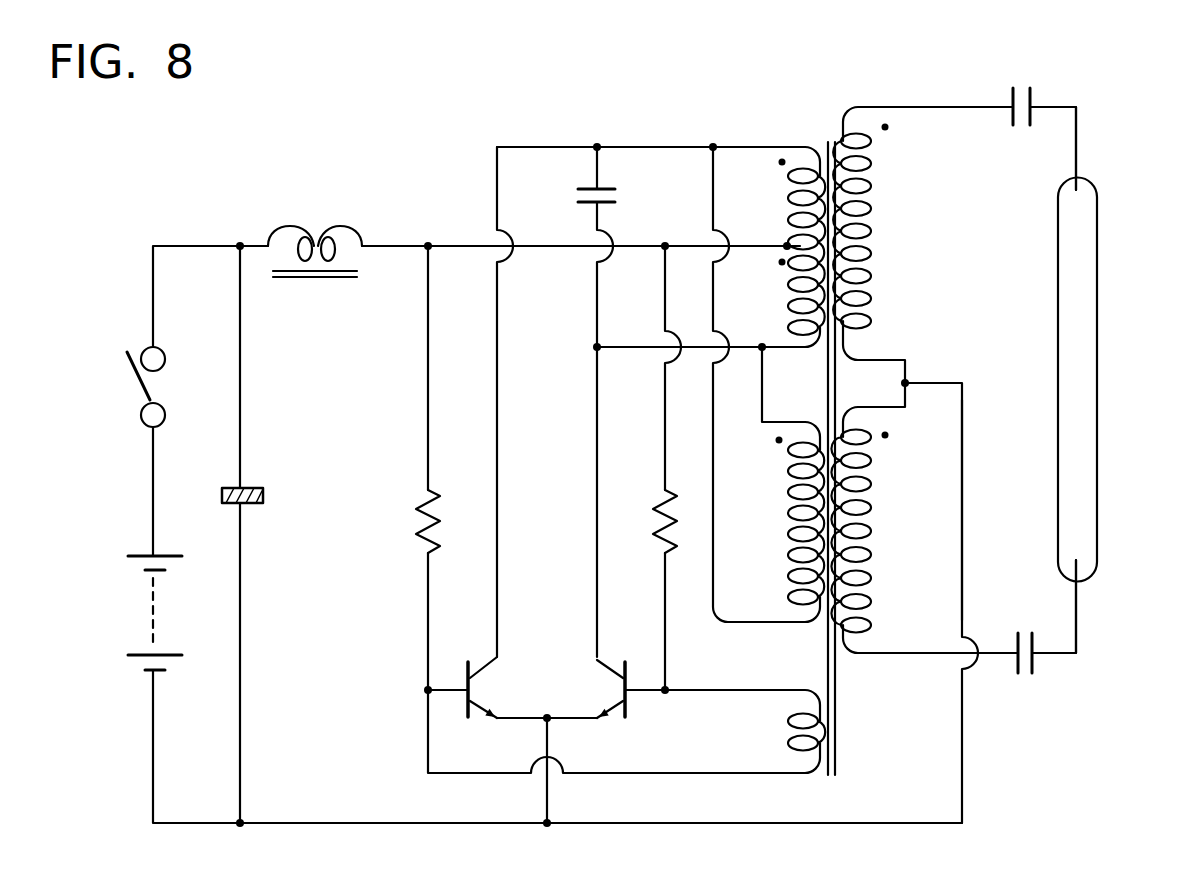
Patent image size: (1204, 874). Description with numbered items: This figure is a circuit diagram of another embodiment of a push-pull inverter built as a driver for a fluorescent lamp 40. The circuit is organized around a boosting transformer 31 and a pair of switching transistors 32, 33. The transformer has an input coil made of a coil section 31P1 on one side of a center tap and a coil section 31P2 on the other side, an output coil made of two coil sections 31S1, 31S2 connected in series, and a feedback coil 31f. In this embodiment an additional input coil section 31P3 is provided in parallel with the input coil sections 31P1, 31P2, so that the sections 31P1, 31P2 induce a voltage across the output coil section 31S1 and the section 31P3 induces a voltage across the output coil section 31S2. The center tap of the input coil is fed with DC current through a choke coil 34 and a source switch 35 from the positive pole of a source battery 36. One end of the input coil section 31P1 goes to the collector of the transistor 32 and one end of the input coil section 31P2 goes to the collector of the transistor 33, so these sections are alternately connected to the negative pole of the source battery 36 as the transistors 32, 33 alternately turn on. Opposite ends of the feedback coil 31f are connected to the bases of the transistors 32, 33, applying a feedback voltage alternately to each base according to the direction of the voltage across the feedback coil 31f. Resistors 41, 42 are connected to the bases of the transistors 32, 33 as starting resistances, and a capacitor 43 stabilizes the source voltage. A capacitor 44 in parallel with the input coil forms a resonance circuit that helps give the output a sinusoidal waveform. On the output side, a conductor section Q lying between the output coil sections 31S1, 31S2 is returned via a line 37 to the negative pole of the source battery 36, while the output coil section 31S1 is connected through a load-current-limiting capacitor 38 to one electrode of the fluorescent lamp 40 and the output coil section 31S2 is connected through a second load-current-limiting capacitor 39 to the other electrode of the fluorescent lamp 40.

The boosting transformer 31 is at (830, 141).
The input coil section 31P1 is at (790, 199).
The input coil section 31P2 is at (797, 308).
The input coil section 31P3 is at (800, 522).
The output coil section 31S1 is at (872, 205).
The output coil section 31S2 is at (872, 482).
The feedback coil 31f is at (830, 735).
The switching transistor 32 is at (500, 677).
The switching transistor 33 is at (612, 697).
The choke coil 34 is at (313, 228).
The source switch 35 is at (148, 388).
The source battery 36 is at (133, 600).
The line 37 is at (963, 737).
The capacitor for load current limiting 38 is at (1020, 88).
The capacitor for load current limiting 39 is at (1024, 623).
The fluorescent lamp 40 is at (1075, 388).
The resistor 41 is at (415, 533).
The resistor 42 is at (660, 505).
The capacitor 43 is at (272, 497).
The capacitor 44 is at (582, 200).
The conductor section Q is at (906, 383).